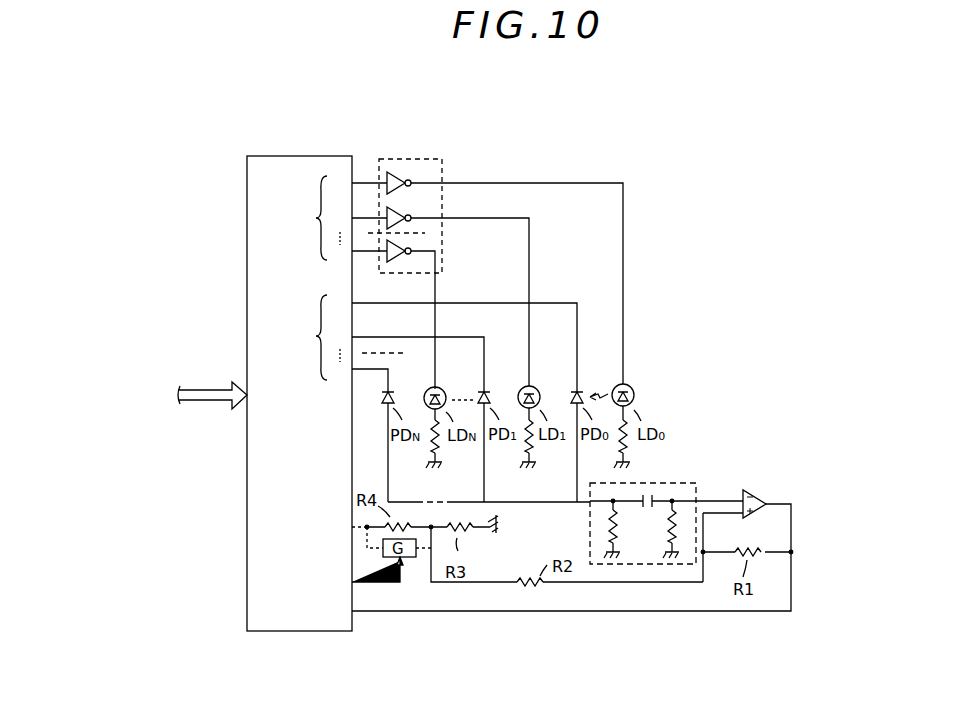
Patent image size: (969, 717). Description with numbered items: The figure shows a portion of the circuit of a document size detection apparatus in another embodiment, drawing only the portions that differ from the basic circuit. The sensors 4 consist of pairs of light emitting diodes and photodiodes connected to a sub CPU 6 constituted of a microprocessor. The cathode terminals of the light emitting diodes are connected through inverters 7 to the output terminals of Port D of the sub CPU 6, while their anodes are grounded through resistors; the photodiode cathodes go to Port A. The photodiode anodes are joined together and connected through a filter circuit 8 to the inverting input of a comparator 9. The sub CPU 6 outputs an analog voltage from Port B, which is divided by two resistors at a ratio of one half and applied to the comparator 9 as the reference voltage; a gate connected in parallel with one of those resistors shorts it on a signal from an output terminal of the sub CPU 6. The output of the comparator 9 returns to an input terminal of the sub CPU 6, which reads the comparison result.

The sensors 4 is at (627, 384).
The sub CPU 6 is at (352, 157).
The inverters 7 is at (403, 177).
The filter circuit 8 is at (697, 482).
The comparator 9 is at (760, 498).